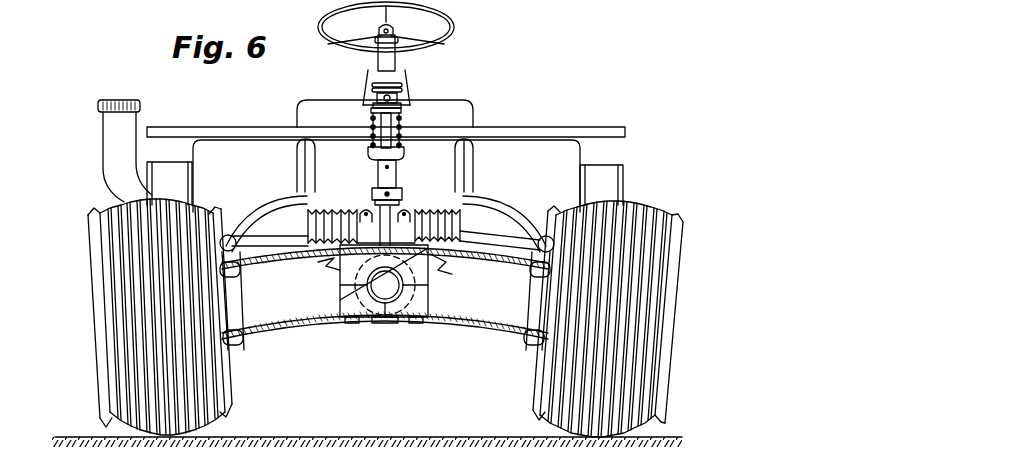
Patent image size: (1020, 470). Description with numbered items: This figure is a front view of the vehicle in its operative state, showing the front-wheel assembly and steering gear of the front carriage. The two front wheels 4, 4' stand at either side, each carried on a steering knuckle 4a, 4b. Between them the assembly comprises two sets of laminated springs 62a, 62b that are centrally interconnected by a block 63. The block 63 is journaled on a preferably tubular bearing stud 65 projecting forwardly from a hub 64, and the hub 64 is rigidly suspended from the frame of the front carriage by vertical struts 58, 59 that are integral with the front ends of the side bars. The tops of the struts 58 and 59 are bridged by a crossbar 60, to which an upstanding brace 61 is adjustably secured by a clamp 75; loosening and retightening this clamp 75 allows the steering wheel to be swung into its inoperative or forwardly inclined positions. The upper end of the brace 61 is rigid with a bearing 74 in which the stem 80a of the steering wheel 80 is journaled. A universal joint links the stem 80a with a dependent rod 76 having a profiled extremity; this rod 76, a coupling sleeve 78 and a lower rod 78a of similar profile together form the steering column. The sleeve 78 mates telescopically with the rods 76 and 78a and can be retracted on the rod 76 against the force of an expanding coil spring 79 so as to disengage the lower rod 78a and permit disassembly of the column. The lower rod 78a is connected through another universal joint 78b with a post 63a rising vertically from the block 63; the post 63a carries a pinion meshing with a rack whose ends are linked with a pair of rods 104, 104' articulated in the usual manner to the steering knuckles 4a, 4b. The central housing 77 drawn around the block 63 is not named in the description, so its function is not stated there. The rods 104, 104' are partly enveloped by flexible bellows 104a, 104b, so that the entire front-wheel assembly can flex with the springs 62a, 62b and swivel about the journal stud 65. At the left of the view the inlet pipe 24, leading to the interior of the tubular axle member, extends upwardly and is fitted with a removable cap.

The front wheel 4 is at (621, 319).
The front wheel 4' is at (130, 317).
The steering knuckle 4a is at (530, 266).
The steering knuckle 4b is at (240, 264).
The inlet pipe 24 is at (105, 142).
The vertical strut 58 is at (297, 122).
The vertical strut 59 is at (468, 212).
The crossbar 60 is at (313, 101).
The upstanding brace 61 is at (369, 78).
The laminated spring 62a is at (470, 270).
The laminated spring 62b is at (472, 340).
The block 63 is at (345, 316).
The post 63a is at (422, 269).
The hub 64 is at (372, 325).
The bearing stud 65 is at (390, 300).
The bearing 74 is at (397, 63).
The clamp 75 is at (370, 107).
The dependent rod 76 is at (400, 117).
The steering gear box 77 is at (345, 265).
The coupling sleeve 78 is at (397, 167).
The lower rod 78a is at (403, 191).
The universal joint 78b is at (371, 201).
The coil spring 79 is at (370, 155).
The steering wheel 80 is at (452, 30).
The stem 80a is at (382, 94).
The rod 104 is at (519, 213).
The rod 104' is at (264, 230).
The flexible bellows 104a is at (437, 214).
The flexible bellows 104b is at (330, 218).